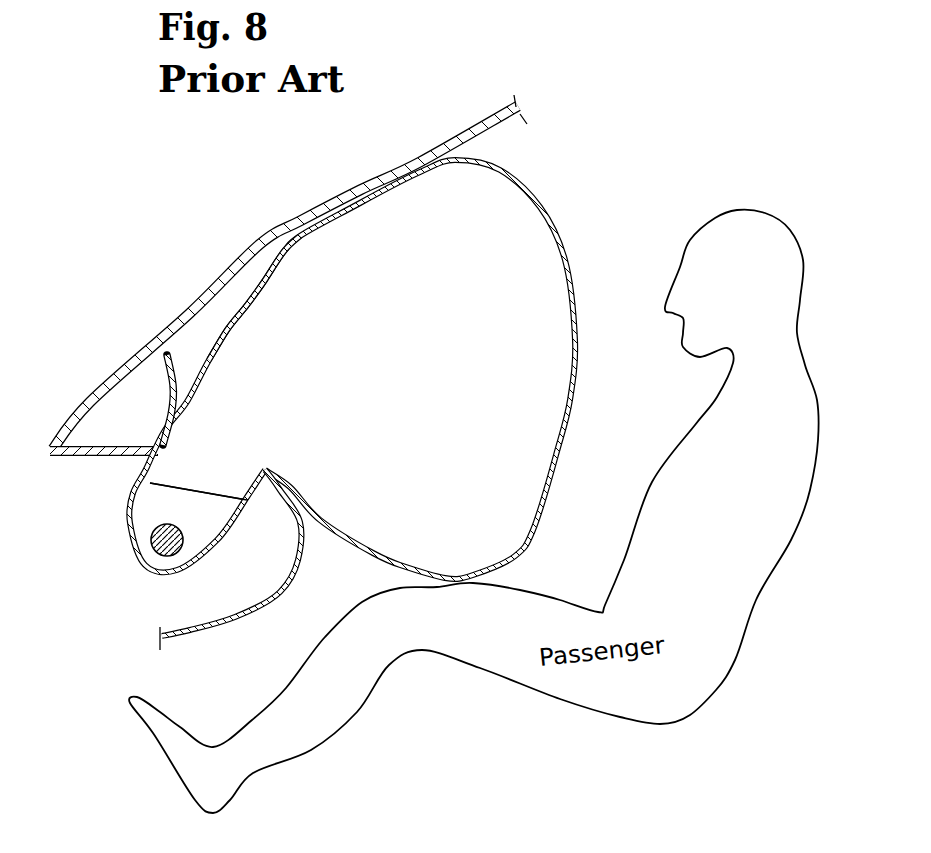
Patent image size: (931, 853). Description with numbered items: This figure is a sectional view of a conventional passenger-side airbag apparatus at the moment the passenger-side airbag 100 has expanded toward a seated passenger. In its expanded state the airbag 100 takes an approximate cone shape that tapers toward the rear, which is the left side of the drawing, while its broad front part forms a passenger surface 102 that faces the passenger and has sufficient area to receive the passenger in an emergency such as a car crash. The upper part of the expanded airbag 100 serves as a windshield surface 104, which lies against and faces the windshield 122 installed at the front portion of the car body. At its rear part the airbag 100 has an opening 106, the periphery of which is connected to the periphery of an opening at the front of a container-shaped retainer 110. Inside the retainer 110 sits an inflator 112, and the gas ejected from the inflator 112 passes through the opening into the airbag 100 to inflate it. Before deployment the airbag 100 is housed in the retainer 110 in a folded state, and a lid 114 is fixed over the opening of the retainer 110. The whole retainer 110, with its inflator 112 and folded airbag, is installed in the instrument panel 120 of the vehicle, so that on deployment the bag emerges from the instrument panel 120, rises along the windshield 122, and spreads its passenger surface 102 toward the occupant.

The passenger-side airbag 100 is at (399, 347).
The passenger surface 102 is at (572, 257).
The windshield surface 104 is at (262, 278).
The opening 106 is at (202, 486).
The retainer 110 is at (140, 487).
The inflator 112 is at (150, 541).
The lid 114 is at (163, 397).
The instrument panel 120 is at (190, 628).
The windshield 122 is at (453, 127).